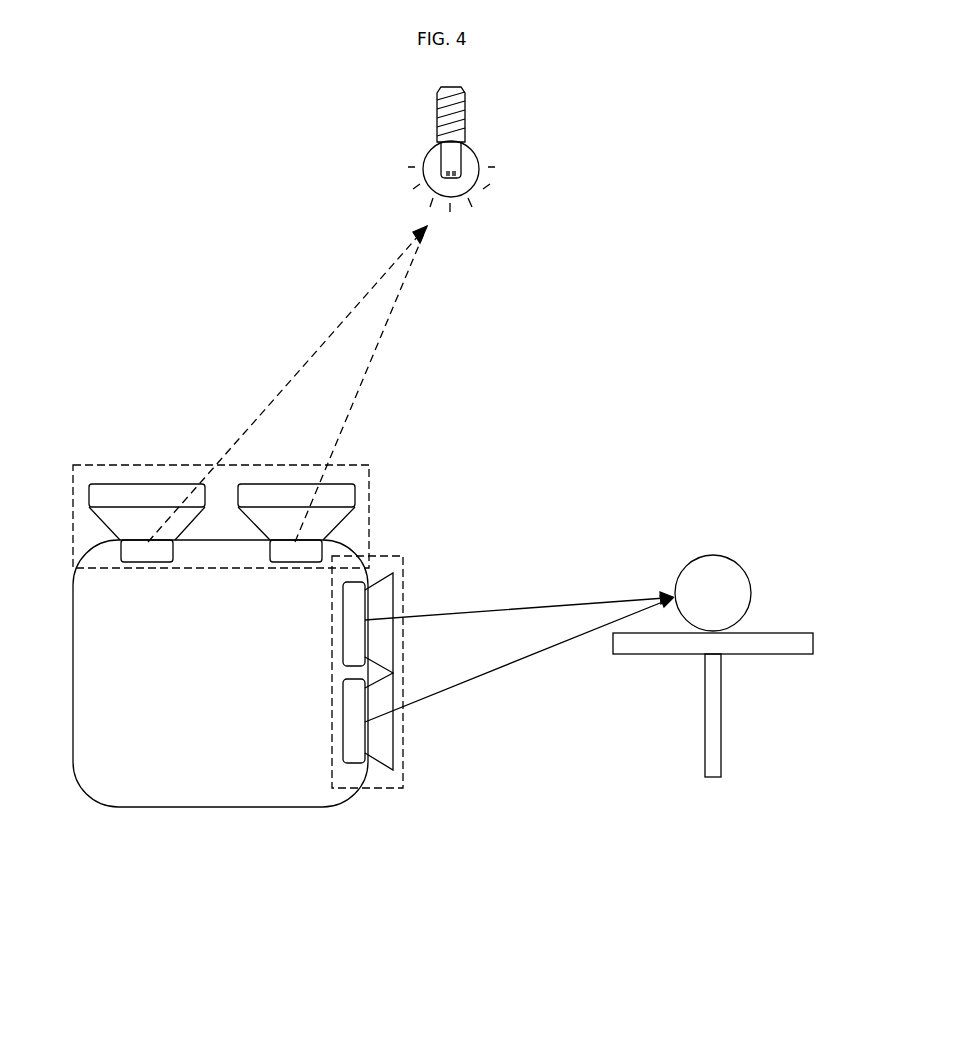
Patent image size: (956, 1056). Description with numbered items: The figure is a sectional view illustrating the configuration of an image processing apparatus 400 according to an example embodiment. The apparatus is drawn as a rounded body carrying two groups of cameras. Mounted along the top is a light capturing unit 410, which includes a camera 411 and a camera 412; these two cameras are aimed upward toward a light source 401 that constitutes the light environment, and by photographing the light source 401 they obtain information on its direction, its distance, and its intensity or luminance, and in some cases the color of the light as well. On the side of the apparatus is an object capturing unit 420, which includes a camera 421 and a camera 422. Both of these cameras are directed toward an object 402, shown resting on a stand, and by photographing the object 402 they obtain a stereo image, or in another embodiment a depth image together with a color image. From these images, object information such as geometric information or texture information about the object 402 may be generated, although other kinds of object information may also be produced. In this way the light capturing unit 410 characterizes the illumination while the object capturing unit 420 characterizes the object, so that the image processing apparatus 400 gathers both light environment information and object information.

The image processing apparatus 400 is at (222, 806).
The light source 401 is at (475, 152).
The object 402 is at (712, 555).
The light capturing unit 410 is at (157, 463).
The camera 411 is at (122, 483).
The camera 412 is at (355, 495).
The object capturing unit 420 is at (373, 788).
The camera 421 is at (393, 598).
The camera 422 is at (393, 733).